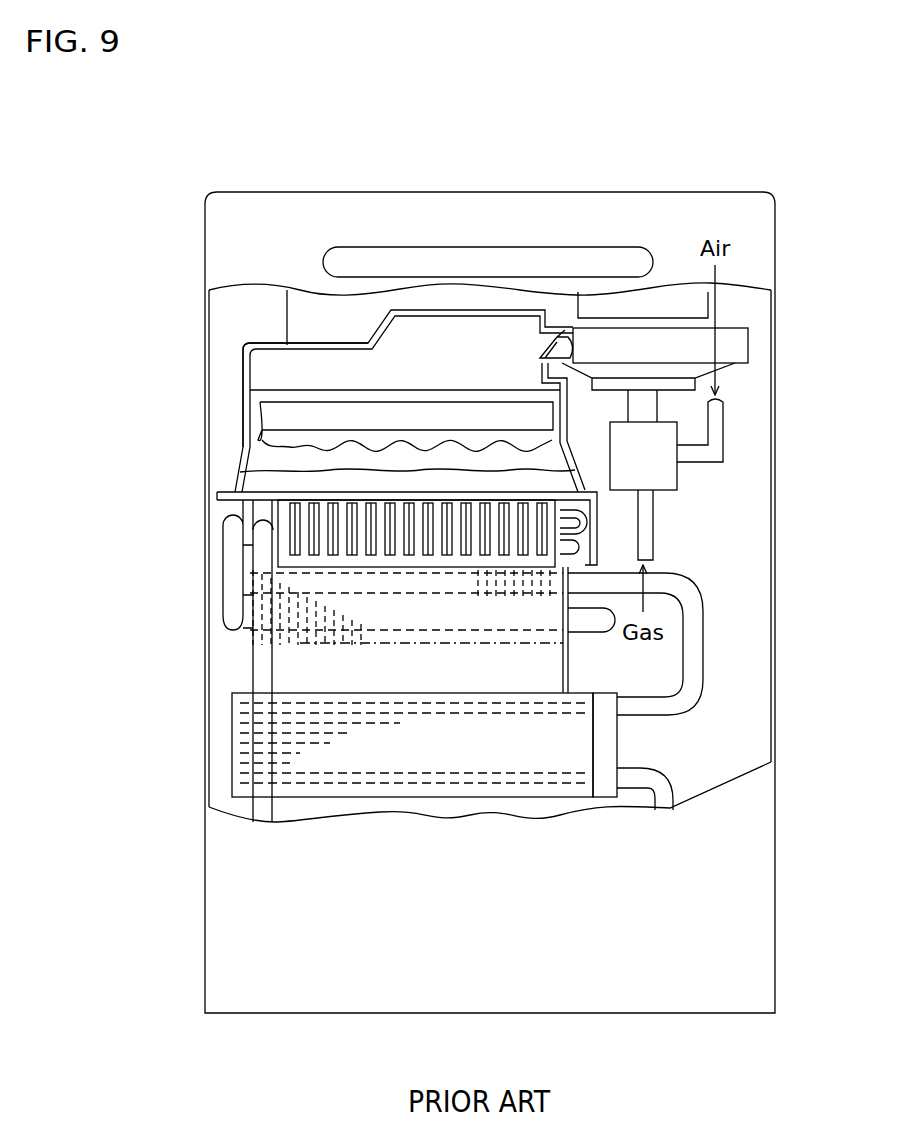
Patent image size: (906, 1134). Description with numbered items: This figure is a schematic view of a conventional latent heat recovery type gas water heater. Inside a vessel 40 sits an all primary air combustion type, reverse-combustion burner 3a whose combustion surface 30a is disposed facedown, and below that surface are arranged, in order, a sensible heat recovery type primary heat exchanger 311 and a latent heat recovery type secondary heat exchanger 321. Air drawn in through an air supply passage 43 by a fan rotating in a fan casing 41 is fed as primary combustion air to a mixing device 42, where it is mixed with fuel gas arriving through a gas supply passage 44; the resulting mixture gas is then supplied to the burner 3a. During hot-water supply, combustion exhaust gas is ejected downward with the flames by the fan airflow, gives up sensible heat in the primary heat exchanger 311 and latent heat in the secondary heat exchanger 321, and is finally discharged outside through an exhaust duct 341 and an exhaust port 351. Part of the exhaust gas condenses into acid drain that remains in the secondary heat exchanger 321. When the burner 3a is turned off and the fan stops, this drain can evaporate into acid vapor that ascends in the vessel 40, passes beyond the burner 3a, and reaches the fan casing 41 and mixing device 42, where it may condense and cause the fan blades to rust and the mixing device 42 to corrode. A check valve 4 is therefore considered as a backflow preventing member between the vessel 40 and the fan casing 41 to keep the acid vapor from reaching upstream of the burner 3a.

The check valve 4 is at (462, 352).
The exhaust port 351 is at (483, 247).
The exhaust duct 341 is at (287, 313).
The vessel 40 is at (247, 362).
The burner 3a is at (283, 415).
The combustion surface 30a is at (271, 449).
The fan casing 41 is at (742, 343).
The mixing device 42 is at (677, 478).
The air supply passage 43 is at (717, 428).
The gas supply passage 44 is at (655, 530).
The primary heat exchanger 311 is at (340, 648).
The secondary heat exchanger 321 is at (331, 697).